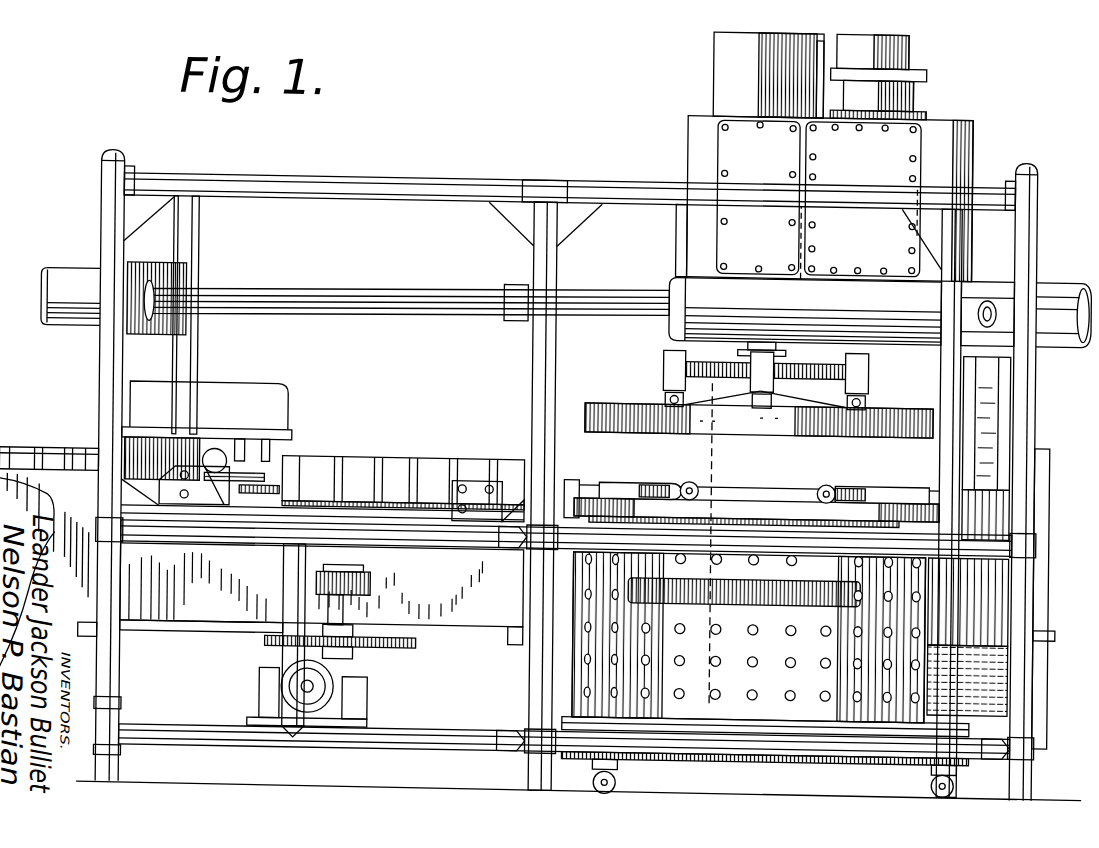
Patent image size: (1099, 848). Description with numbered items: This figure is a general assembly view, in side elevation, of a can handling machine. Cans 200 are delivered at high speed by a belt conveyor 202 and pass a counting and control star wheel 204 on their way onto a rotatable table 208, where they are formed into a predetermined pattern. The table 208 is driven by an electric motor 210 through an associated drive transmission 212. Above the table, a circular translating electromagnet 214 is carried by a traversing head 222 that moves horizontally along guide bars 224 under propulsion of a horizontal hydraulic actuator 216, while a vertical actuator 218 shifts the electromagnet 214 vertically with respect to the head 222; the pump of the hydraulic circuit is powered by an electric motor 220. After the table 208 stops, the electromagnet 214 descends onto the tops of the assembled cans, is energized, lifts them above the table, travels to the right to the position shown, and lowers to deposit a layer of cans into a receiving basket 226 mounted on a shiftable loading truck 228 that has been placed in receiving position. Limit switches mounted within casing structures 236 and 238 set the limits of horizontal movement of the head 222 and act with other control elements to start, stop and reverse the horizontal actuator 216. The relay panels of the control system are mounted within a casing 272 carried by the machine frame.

The cans 200 is at (50, 458).
The belt conveyor 202 is at (21, 488).
The counting and control star wheel 204 is at (300, 469).
The rotatable table 208 is at (402, 517).
The electric motor 210 is at (287, 689).
The drive transmission 212 is at (375, 643).
The circular translating electromagnet 214 is at (608, 404).
The hydraulic actuator 216 is at (611, 289).
The actuator 218 is at (716, 70).
The electric motor 220 is at (902, 43).
The traversing head 222 is at (688, 143).
The guide bars 224 is at (343, 303).
The receiving basket 226 is at (781, 496).
The shiftable loading truck 228 is at (718, 768).
The casing structure 236 is at (64, 283).
The casing structure 238 is at (1050, 280).
The casing 272 is at (985, 442).